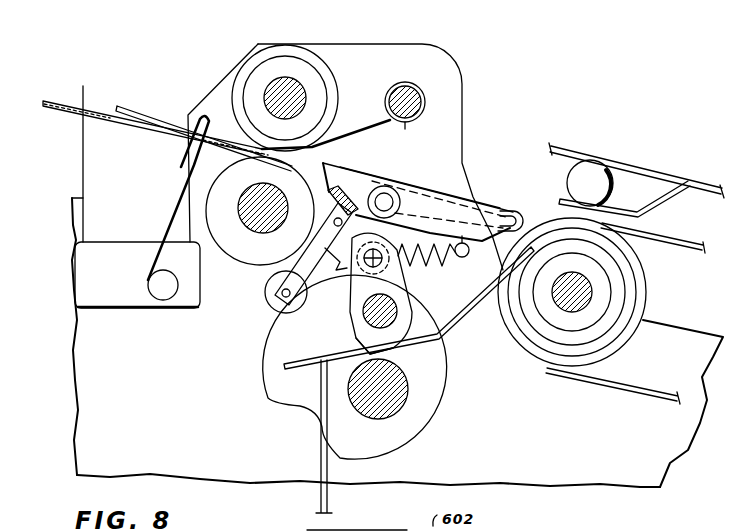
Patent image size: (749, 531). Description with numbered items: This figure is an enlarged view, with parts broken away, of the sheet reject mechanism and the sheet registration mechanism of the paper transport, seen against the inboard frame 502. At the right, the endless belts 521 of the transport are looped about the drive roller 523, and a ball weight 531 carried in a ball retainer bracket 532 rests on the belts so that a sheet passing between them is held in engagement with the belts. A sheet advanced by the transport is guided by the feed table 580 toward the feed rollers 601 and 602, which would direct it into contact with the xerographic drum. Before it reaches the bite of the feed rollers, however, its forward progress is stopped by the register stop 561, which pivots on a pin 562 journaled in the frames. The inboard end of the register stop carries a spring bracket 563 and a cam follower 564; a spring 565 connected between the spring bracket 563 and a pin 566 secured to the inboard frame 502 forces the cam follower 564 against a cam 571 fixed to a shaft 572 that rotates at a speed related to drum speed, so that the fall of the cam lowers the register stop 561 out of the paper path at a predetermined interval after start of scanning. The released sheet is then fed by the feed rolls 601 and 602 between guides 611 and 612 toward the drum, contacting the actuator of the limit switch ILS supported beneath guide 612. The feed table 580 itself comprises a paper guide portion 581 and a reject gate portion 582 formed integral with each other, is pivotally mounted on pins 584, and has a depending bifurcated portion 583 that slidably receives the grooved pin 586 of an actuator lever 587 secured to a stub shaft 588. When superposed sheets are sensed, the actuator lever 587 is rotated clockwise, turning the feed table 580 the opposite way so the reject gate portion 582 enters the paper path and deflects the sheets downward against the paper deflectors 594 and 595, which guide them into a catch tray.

The inboard frame 502 is at (459, 106).
The limit switch 1LS ILS is at (82, 278).
The feed roller 602 is at (297, 46).
The guide 612 is at (85, 90).
The guide 611 is at (340, 128).
The paper guide portion 581 is at (378, 163).
The pin 562 is at (296, 180).
The feed roller 601 is at (241, 230).
The feed table 580 is at (423, 165).
The register stop 561 is at (331, 160).
The pins 584 is at (392, 196).
The bifurcated portion 583 is at (392, 199).
The reject gate portion 582 is at (494, 208).
The spring 565 is at (418, 263).
The pin 566 is at (462, 236).
The spring bracket 563 is at (286, 268).
The cam follower 564 is at (267, 292).
The actuator lever 587 is at (350, 310).
The stub shaft 588 is at (356, 338).
The grooved pin 586 is at (377, 272).
The cam 571 is at (449, 380).
The shaft 572 is at (368, 418).
The paper deflector 594 is at (469, 305).
The paper deflector 595 is at (320, 458).
The drive roller 523 is at (597, 288).
The ball weight 531 is at (567, 182).
The ball retainer bracket 532 is at (653, 206).
The endless belt 521 is at (626, 380).